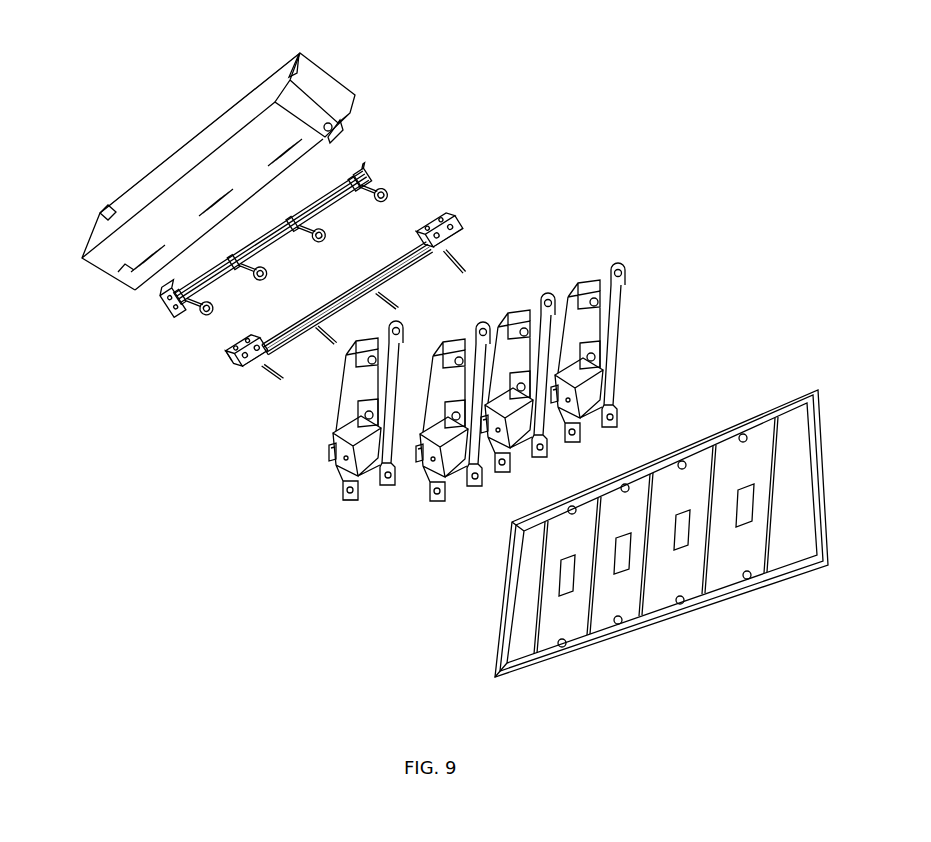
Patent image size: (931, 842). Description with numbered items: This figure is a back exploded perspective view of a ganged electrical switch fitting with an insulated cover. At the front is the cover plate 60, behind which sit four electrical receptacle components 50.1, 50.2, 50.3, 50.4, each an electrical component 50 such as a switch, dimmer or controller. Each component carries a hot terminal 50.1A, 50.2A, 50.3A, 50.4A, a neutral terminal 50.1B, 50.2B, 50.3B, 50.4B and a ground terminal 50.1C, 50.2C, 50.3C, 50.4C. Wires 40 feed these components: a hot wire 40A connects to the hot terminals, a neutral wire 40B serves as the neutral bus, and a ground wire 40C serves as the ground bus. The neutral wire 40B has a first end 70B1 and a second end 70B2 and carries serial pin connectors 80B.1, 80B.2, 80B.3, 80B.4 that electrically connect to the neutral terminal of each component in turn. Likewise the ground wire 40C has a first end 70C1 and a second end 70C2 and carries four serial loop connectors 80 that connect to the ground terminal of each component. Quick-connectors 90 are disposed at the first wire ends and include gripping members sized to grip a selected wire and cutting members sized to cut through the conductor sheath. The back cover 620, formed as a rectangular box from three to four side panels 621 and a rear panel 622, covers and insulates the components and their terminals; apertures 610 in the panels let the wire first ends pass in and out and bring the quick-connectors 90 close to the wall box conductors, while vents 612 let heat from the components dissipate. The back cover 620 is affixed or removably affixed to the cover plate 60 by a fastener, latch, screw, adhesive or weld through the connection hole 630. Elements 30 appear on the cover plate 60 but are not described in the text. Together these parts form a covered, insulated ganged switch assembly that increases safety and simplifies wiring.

The fastening screw 30 is at (658, 517).
The wires 40 is at (250, 393).
The hot wire 40A is at (265, 350).
The neutral wire 40B is at (412, 214).
The ground wire 40C is at (272, 236).
The electrical component 50 is at (319, 541).
The electrical receptacle component 50.1 is at (632, 369).
The hot terminal 50.1A is at (657, 345).
The neutral terminal 50.1B is at (646, 354).
The ground terminal 50.1C is at (579, 430).
The electrical receptacle component 50.2 is at (541, 377).
The hot terminal 50.2A is at (577, 344).
The neutral terminal 50.2B is at (515, 335).
The ground terminal 50.2C is at (486, 468).
The electrical receptacle component 50.3 is at (470, 384).
The hot terminal 50.3A is at (501, 351).
The neutral terminal 50.3B is at (438, 364).
The ground terminal 50.3C is at (426, 498).
The electrical receptacle component 50.4 is at (340, 466).
The hot terminal 50.4A is at (384, 466).
The neutral terminal 50.4B is at (324, 402).
The ground terminal 50.4C is at (308, 473).
The cover plate 60 is at (661, 533).
The first end of neutral wire 70B1 is at (223, 377).
The second end of neutral wire 70B2 is at (486, 204).
The first end of ground wire 70C1 is at (113, 362).
The second end of ground wire 70C2 is at (390, 139).
The loop connector 80 is at (298, 286).
The pin connector 80B.1 is at (476, 231).
The pin connector 80B.2 is at (367, 314).
The pin connector 80B.3 is at (310, 350).
The pin connector 80B.4 is at (251, 412).
The quick-connectors 90 is at (229, 356).
The aperture 610 is at (196, 114).
The vent 612 is at (98, 294).
The back cover 620 is at (185, 171).
The side panels 621 is at (209, 196).
The rear panel 622 is at (108, 212).
The connection hole 630 is at (265, 89).